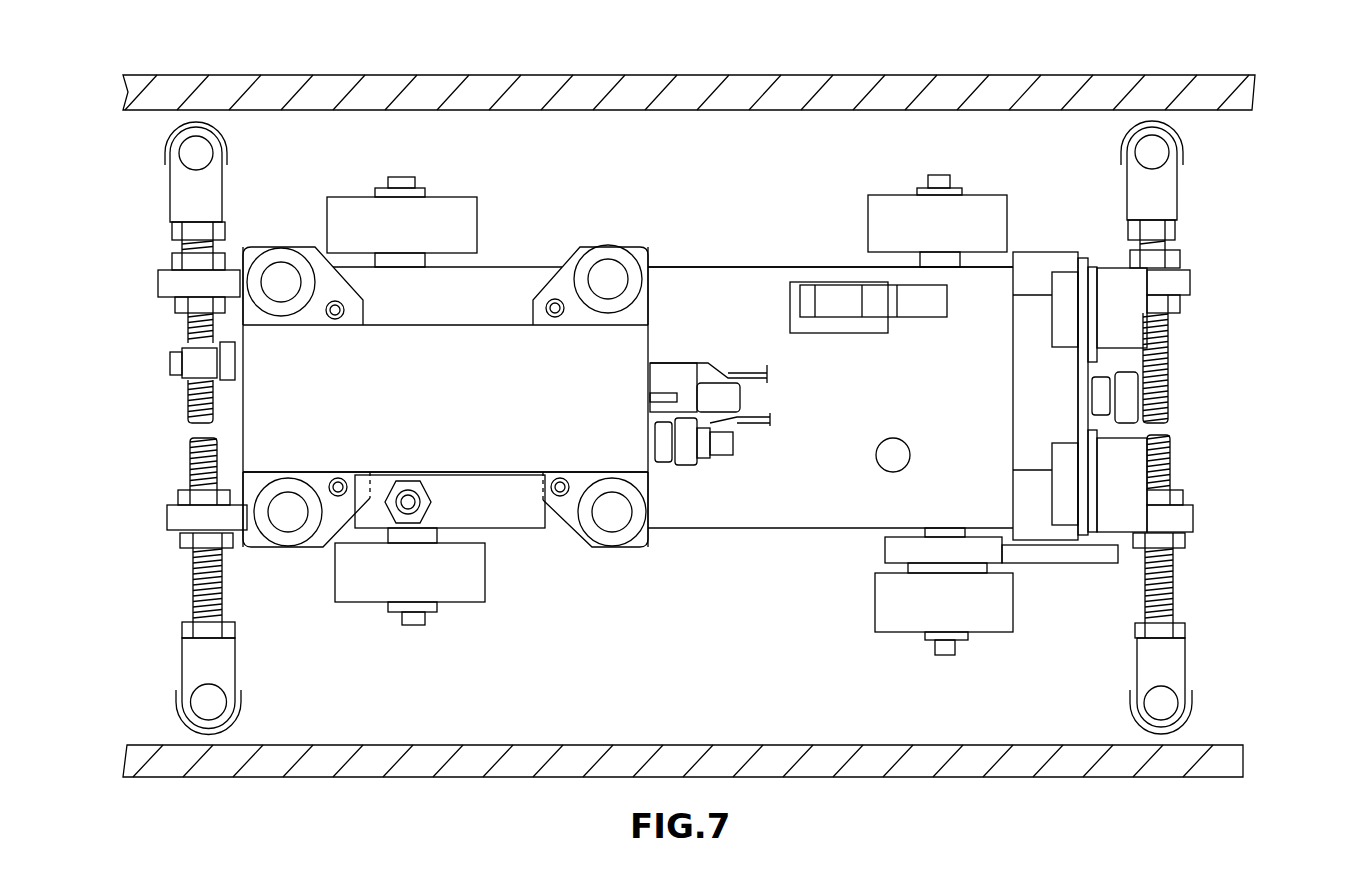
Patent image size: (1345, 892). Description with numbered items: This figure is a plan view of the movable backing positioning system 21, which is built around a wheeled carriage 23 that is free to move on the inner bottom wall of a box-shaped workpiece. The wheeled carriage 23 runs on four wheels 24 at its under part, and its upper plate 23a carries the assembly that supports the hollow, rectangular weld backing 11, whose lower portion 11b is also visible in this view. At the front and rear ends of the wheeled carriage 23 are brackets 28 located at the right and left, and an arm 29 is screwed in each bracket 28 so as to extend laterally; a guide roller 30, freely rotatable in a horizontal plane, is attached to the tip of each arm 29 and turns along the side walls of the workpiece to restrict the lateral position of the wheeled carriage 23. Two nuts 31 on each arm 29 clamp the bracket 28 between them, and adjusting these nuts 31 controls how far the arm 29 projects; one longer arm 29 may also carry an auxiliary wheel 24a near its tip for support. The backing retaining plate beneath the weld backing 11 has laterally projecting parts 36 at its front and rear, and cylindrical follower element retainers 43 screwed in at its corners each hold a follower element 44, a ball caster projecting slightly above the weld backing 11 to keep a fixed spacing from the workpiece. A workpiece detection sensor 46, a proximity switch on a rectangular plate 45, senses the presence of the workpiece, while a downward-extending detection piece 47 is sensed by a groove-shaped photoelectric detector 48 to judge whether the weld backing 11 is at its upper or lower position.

The weld backing 11 is at (472, 320).
The carriage body bottom plate 11b is at (503, 333).
The movable backing positioning system 21 is at (1252, 232).
The wheeled carriage 23 is at (786, 532).
The upper plate 23a is at (752, 282).
The wheels 24 is at (458, 205).
The auxiliary wheel 24a is at (990, 210).
The brackets 28 is at (160, 282).
The arm 29 is at (192, 336).
The guide roller 30 is at (226, 147).
The nuts 31 is at (182, 232).
The projecting parts 36 is at (305, 247).
The follower element retainers 43 is at (262, 262).
The follower element 44 is at (292, 268).
The rectangular plate 45 is at (522, 515).
The workpiece detection sensor 46 is at (413, 512).
The detection piece 47 is at (660, 392).
The photoelectric detector 48 is at (688, 370).